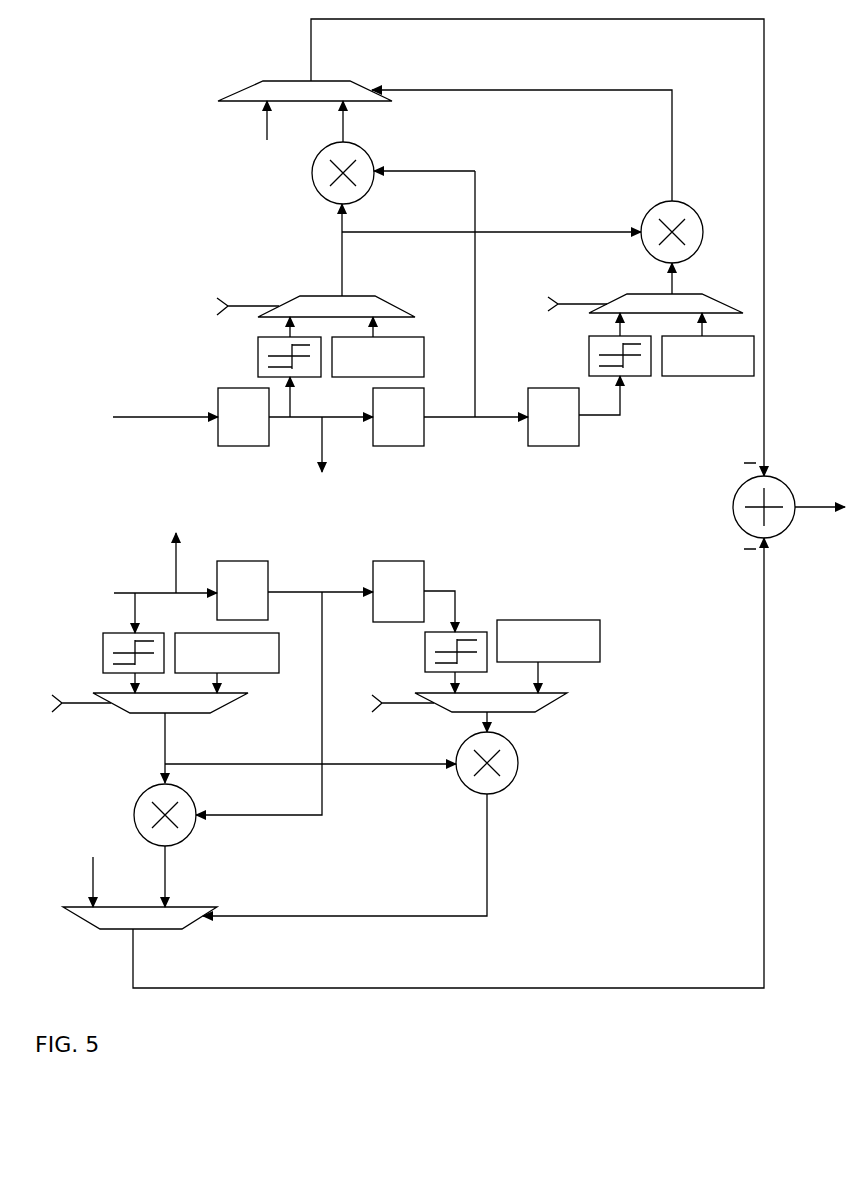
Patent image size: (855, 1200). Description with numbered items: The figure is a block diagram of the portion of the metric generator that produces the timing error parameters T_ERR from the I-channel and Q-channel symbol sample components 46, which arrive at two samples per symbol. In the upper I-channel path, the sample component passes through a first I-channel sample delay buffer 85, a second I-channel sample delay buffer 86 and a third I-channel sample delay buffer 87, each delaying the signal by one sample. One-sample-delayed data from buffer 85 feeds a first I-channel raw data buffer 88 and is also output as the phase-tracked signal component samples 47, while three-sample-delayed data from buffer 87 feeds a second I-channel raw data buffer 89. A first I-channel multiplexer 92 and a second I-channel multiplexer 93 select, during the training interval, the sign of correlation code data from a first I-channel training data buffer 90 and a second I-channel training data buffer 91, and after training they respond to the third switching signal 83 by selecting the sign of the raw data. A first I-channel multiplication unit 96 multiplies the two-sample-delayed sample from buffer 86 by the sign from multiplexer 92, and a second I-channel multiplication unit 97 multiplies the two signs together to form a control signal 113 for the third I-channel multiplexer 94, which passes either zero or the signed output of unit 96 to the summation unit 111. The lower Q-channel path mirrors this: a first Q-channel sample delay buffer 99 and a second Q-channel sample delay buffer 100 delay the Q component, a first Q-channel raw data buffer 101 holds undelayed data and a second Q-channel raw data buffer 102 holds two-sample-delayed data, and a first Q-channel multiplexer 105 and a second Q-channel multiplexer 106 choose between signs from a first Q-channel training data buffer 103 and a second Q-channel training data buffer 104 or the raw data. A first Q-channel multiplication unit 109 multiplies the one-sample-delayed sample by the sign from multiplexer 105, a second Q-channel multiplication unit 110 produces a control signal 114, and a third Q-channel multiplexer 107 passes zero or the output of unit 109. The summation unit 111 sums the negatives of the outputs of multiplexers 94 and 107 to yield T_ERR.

The symbol sample components 46 is at (140, 505).
The phase-tracked signal component samples 47 is at (248, 505).
The third switching signal 83 is at (316, 502).
The first I-channel sample delay buffer 85 is at (238, 448).
The second I-channel sample delay buffer 86 is at (392, 448).
The third I-channel sample delay buffer 87 is at (547, 450).
The first I-channel raw data buffer 88 is at (258, 367).
The second I-channel raw data buffer 89 is at (588, 366).
The first I-channel training data buffer 90 is at (416, 334).
The second I-channel training data buffer 91 is at (702, 377).
The first I-channel multiplexer 92 is at (395, 297).
The second I-channel multiplexer 93 is at (617, 293).
The third I-channel multiplexer 94 is at (239, 91).
The first I-channel multiplication unit 96 is at (368, 153).
The second I-channel multiplication unit 97 is at (692, 212).
The first Q-channel sample delay buffer 99 is at (237, 560).
The second Q-channel sample delay buffer 100 is at (392, 558).
The first Q-channel raw data buffer 101 is at (103, 652).
The second Q-channel raw data buffer 102 is at (424, 660).
The first Q-channel training data buffer 103 is at (268, 673).
The second Q-channel training data buffer 104 is at (550, 618).
The first Q-channel multiplexer 105 is at (208, 713).
The second Q-channel multiplexer 106 is at (553, 702).
The third Q-channel multiplexer 107 is at (72, 907).
The first Q-channel multiplication unit 109 is at (188, 837).
The second Q-channel multiplication unit 110 is at (507, 782).
The summation unit 111 is at (733, 507).
The control signal 113 is at (518, 92).
The control signal 114 is at (363, 918).